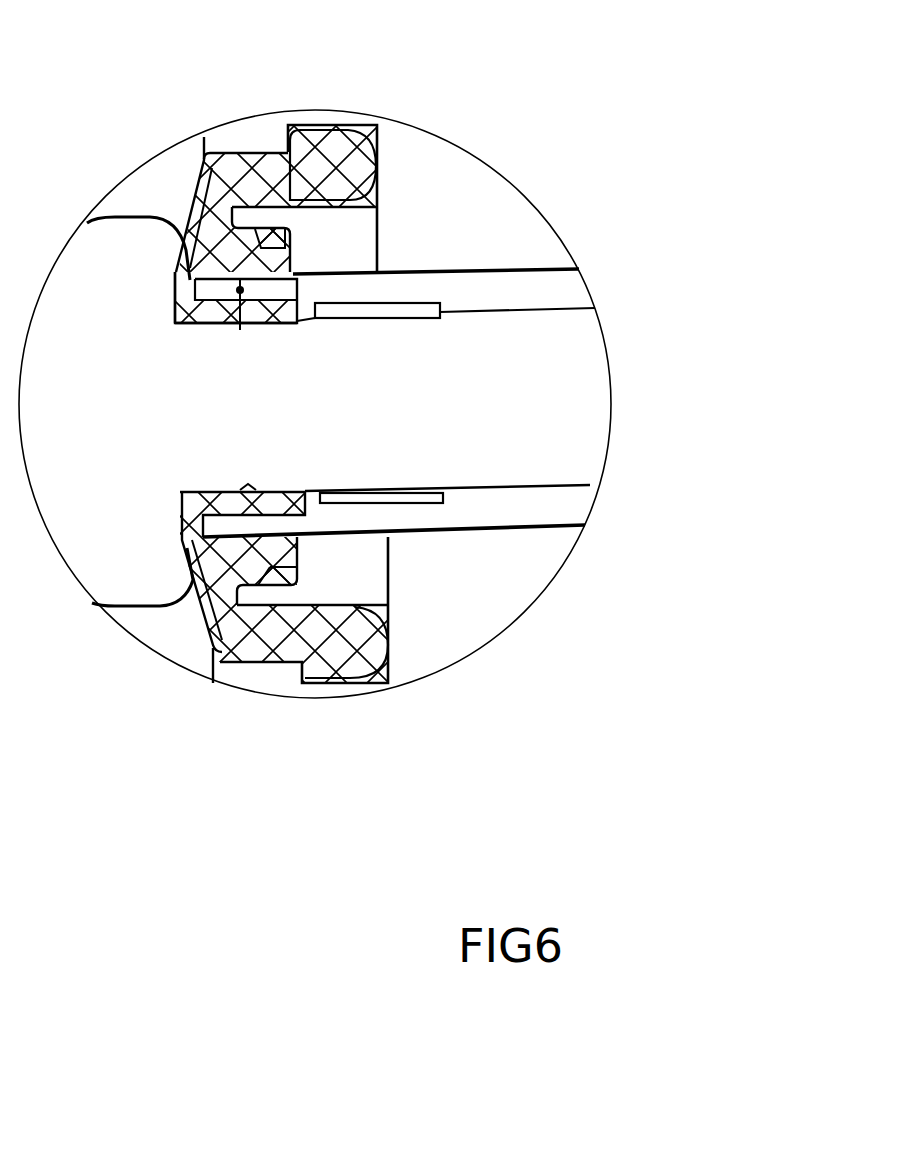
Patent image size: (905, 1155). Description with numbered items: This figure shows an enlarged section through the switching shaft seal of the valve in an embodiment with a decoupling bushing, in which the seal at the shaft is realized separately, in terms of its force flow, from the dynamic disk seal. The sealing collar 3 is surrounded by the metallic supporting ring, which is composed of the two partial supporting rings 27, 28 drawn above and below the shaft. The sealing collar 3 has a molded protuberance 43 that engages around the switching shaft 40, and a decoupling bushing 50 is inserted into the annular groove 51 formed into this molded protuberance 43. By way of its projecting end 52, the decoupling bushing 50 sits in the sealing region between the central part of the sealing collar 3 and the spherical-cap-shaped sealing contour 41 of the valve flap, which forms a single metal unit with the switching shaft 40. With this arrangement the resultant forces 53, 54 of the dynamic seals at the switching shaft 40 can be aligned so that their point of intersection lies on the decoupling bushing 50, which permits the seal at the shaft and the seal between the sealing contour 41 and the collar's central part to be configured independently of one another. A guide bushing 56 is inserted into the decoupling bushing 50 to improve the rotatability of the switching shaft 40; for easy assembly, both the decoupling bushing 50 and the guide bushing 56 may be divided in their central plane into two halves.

The sealing collar 3 is at (257, 195).
The partial supporting ring 27 is at (360, 245).
The partial supporting ring 28 is at (365, 562).
The switching shaft 40 is at (490, 405).
The sealing contour 41 is at (193, 580).
The molded protuberance 43 is at (197, 327).
The decoupling bushing 50 is at (480, 495).
The annular groove 51 is at (257, 307).
The projecting end 52 is at (177, 305).
The resultant force 53 is at (177, 275).
The resultant force 54 is at (233, 327).
The guide bushing 56 is at (405, 303).